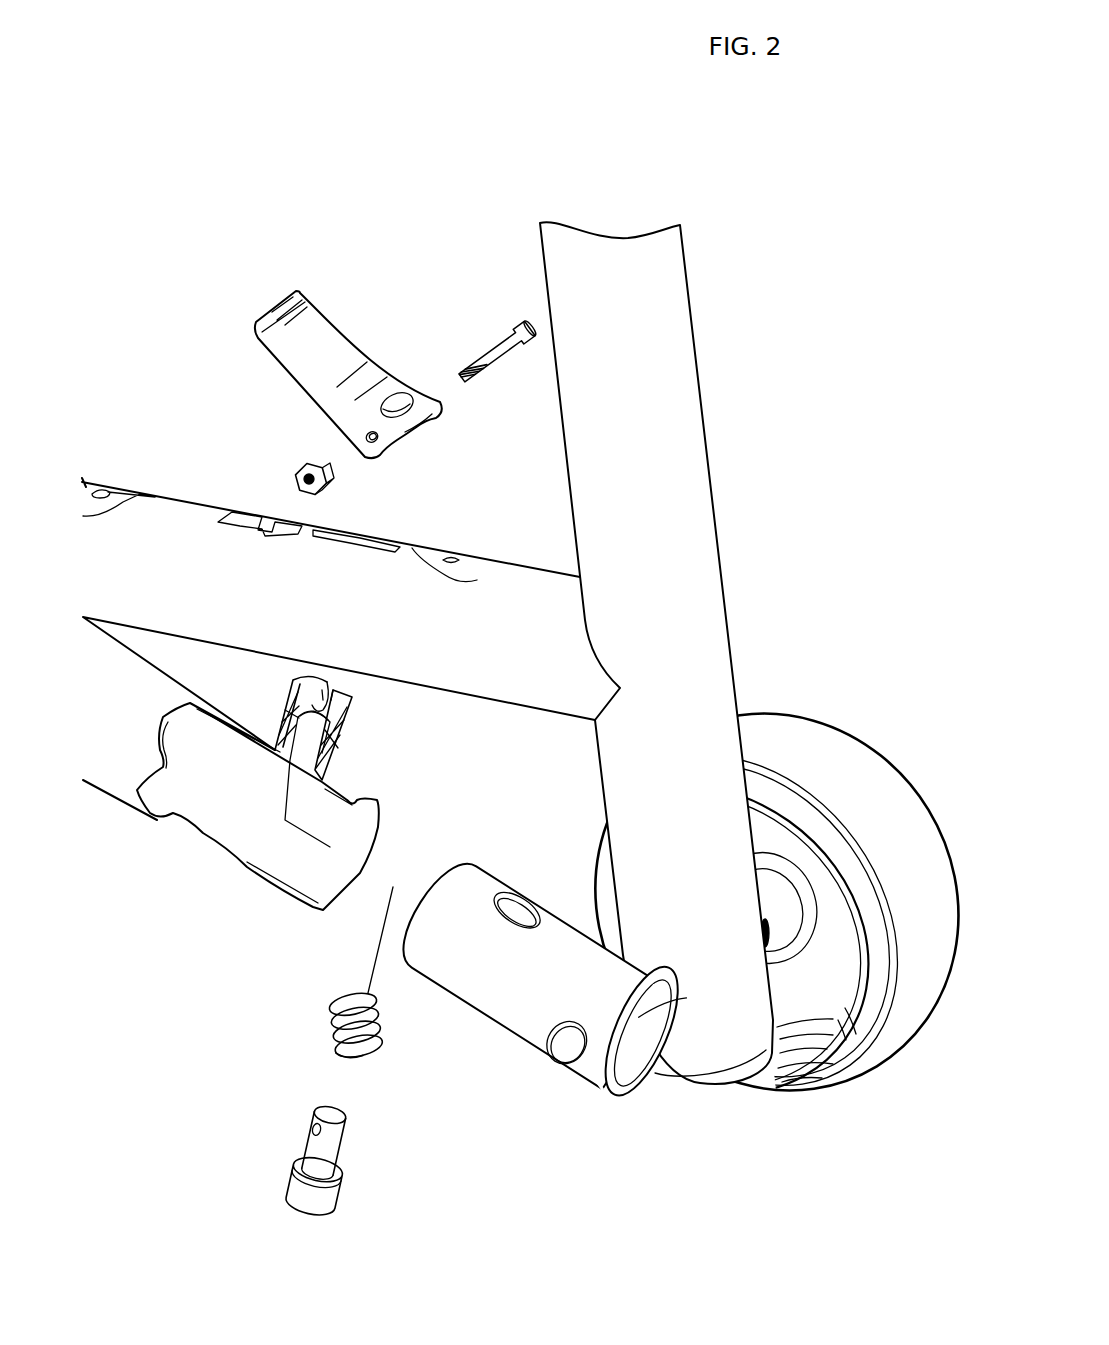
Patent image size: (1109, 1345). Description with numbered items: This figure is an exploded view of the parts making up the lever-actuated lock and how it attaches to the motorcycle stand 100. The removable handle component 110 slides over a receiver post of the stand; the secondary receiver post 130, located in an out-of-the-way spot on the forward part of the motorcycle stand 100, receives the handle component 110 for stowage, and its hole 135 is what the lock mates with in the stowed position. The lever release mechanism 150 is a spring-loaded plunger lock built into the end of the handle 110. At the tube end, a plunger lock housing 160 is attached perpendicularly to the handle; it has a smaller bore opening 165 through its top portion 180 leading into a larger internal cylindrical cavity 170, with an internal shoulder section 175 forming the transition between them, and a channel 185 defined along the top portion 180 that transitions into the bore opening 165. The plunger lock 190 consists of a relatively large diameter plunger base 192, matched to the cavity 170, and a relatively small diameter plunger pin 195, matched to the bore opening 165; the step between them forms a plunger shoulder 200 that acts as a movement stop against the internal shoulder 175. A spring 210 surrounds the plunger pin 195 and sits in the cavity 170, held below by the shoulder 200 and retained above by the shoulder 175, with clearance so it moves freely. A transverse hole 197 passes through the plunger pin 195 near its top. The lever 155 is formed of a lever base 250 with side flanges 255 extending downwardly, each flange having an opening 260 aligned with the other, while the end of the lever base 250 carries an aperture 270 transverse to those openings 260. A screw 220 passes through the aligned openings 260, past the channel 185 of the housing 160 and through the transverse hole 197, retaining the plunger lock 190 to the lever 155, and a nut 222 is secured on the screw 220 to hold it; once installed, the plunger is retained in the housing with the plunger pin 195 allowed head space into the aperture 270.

The motorcycle stand 100 is at (731, 431).
The handle component 110 is at (115, 743).
The secondary receiver post 130 is at (590, 1061).
The hole 135 is at (567, 1043).
The lever release mechanism 150 is at (288, 301).
The lever 155 is at (292, 296).
The plunger lock housing 160 is at (355, 725).
The bore opening 165 is at (313, 703).
The internal cylindrical cavity 170 is at (297, 738).
The internal shoulder section 175 is at (327, 730).
The top portion 180 is at (347, 703).
The channel 185 is at (340, 697).
The plunger lock 190 is at (275, 1106).
The plunger base 192 is at (315, 1181).
The plunger pin 195 is at (325, 1139).
The transverse hole 197 is at (316, 1129).
The plunger shoulder 200 is at (314, 1186).
The spring 210 is at (340, 1018).
The screw 220 is at (447, 387).
The nut 222 is at (303, 463).
The lever base 250 is at (324, 283).
The side flanges 255 is at (283, 365).
The opening 260 is at (378, 440).
The aperture 270 is at (397, 396).